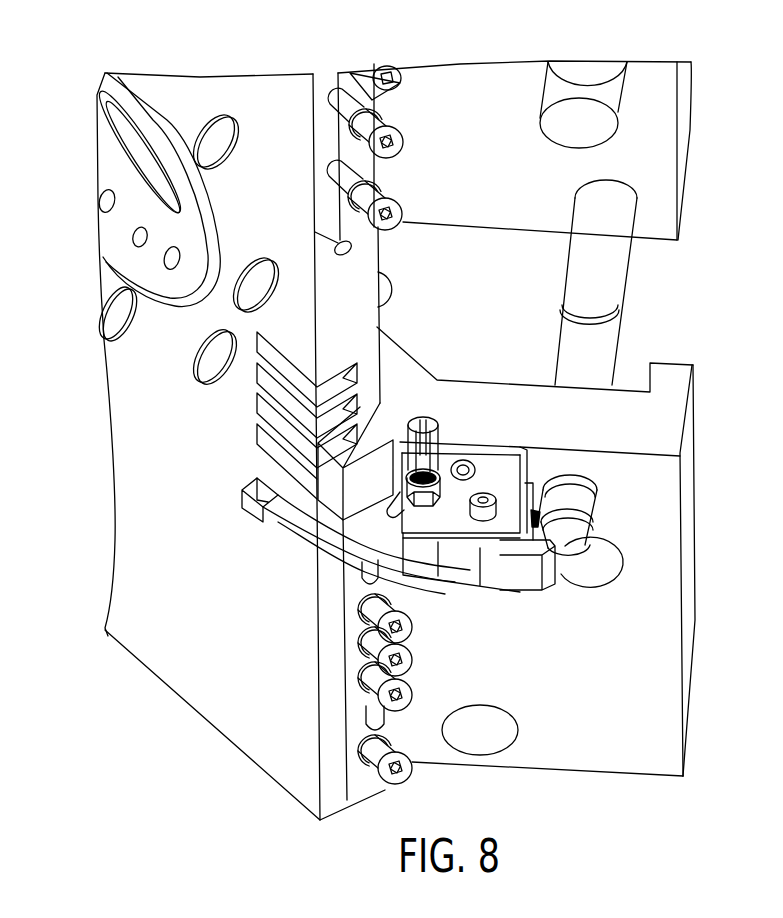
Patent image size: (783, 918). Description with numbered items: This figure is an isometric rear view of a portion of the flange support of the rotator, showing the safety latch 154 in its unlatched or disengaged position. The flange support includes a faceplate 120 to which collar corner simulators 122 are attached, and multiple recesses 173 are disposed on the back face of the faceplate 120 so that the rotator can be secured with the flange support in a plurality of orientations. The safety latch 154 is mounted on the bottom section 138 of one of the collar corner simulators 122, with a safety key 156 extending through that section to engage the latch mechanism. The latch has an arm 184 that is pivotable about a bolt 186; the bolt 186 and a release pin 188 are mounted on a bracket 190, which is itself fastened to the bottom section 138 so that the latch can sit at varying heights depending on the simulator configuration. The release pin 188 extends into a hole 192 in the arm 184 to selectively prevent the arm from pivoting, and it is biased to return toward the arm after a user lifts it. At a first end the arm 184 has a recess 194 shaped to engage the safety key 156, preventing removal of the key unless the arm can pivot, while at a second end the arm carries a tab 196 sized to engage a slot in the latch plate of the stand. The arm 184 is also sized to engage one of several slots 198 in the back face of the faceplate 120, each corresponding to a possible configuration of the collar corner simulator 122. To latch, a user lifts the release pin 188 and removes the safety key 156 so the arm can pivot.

The faceplate 120 is at (172, 672).
The collar corner simulator 122 is at (700, 125).
The bottom section 138 is at (688, 690).
The safety latch 154 is at (690, 338).
The safety key 156 is at (613, 290).
The recesses 173 is at (260, 288).
The arm 184 is at (550, 568).
The bolt 186 is at (483, 494).
The release pin 188 is at (422, 432).
The bracket 190 is at (518, 467).
The hole 192 is at (420, 542).
The recess 194 is at (540, 515).
The tab 196 is at (247, 488).
The slot 198 is at (264, 426).